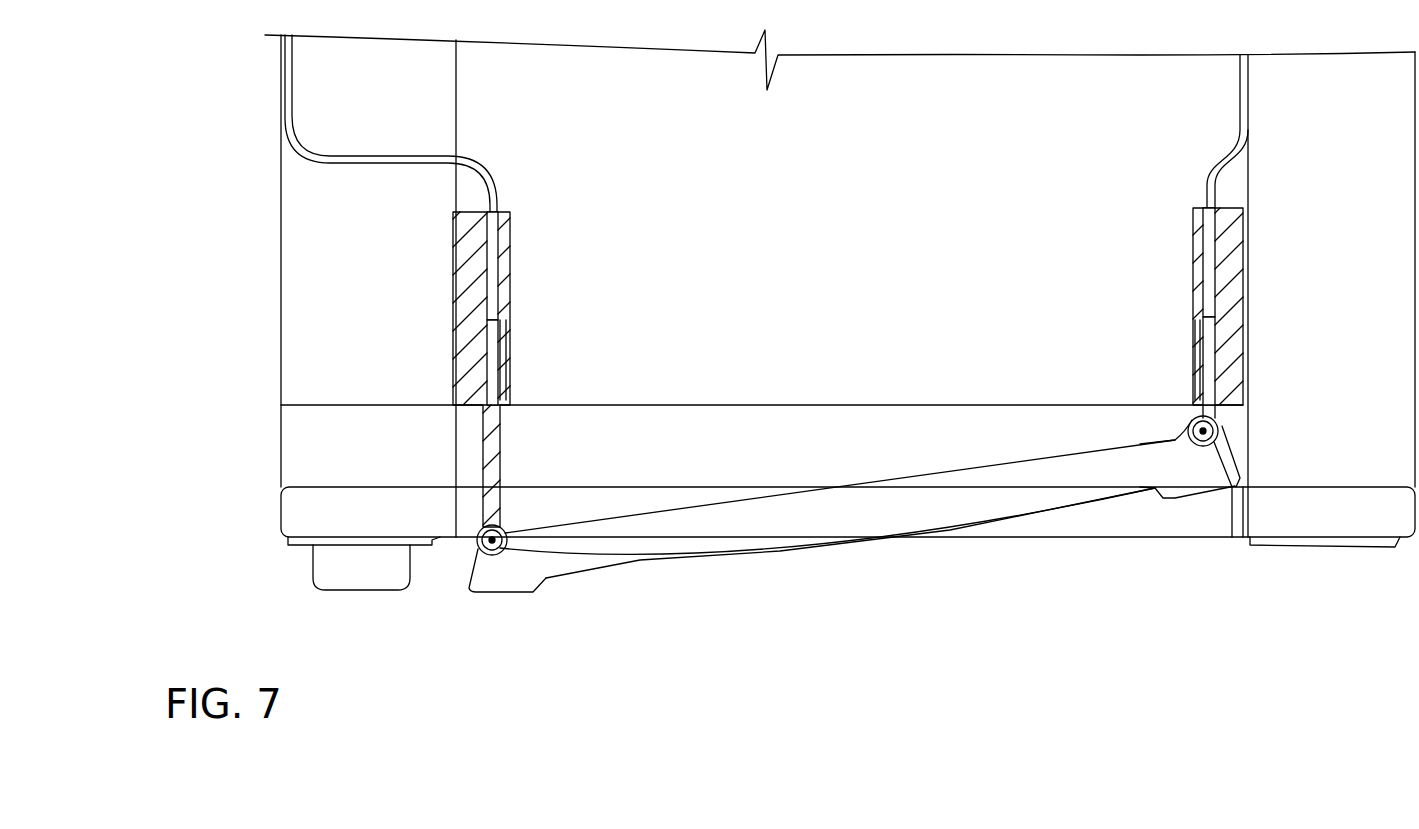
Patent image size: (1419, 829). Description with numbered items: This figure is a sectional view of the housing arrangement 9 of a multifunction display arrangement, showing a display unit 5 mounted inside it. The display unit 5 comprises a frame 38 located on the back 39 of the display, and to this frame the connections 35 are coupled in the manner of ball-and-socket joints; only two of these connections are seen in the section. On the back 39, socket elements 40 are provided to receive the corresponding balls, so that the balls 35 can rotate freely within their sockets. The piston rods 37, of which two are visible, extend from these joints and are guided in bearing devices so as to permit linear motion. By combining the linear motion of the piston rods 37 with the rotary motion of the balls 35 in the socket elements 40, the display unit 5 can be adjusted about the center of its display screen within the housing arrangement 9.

The housing arrangement 9 is at (263, 385).
The piston rods 37 is at (493, 353).
The connections (balls) 35 is at (490, 552).
The socket elements 40 is at (478, 553).
The frame 38 is at (521, 573).
The display unit 5 is at (641, 560).
The back of the display 39 is at (686, 508).